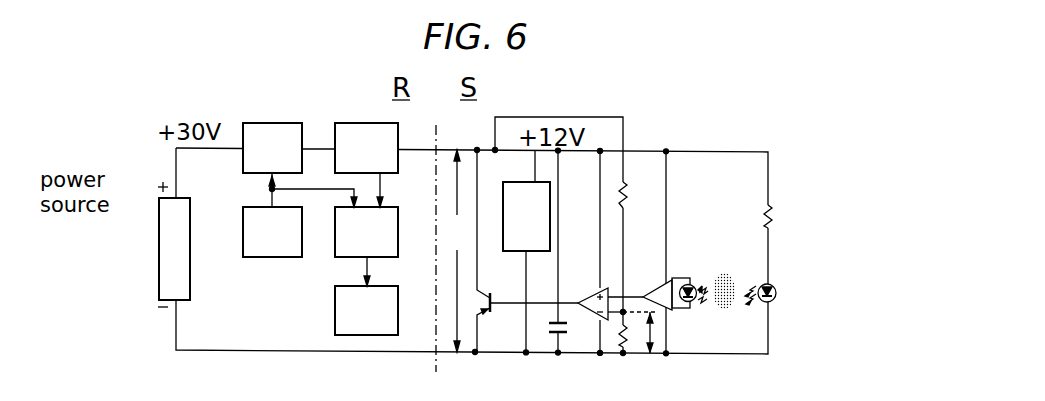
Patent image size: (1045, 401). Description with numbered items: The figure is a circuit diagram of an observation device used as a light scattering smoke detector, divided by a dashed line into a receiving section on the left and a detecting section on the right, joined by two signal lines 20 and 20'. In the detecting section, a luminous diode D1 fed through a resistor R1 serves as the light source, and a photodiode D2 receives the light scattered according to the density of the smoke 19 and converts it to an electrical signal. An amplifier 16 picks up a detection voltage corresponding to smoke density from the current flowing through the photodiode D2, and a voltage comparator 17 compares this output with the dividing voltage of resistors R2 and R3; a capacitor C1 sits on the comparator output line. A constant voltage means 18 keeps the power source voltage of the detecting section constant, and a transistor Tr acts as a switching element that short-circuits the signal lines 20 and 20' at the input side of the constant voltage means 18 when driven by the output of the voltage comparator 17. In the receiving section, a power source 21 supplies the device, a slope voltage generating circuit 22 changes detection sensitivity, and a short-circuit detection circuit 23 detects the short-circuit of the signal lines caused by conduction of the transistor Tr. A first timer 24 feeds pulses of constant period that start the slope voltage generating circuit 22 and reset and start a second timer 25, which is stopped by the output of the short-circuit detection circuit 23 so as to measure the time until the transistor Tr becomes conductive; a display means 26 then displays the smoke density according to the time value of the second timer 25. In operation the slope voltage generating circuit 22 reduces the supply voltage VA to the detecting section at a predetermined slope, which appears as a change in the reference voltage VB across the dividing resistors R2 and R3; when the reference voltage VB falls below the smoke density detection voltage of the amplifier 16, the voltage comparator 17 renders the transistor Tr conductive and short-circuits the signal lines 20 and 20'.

The amplifier 16 is at (666, 284).
The voltage comparator 17 is at (600, 290).
The constant voltage means 18 is at (504, 185).
The smoke 19 is at (717, 274).
The signal line 20 is at (465, 128).
The signal line 20' is at (466, 375).
The power source 21 is at (180, 198).
The slope voltage generating circuit 22 is at (138, 88).
The short-circuit detection circuit 23 is at (367, 123).
The first timer 24 is at (256, 207).
The second timer 25 is at (385, 207).
The display means 26 is at (335, 303).
The resistor R1 is at (771, 208).
The dividing resistor R2 is at (623, 200).
The dividing resistor R3 is at (615, 338).
The capacitor C1 is at (563, 338).
The luminous diode D1 is at (777, 291).
The photodiode D2 is at (690, 303).
The transistor Tr is at (526, 251).
The supply voltage VA is at (460, 251).
The reference voltage VB is at (648, 343).